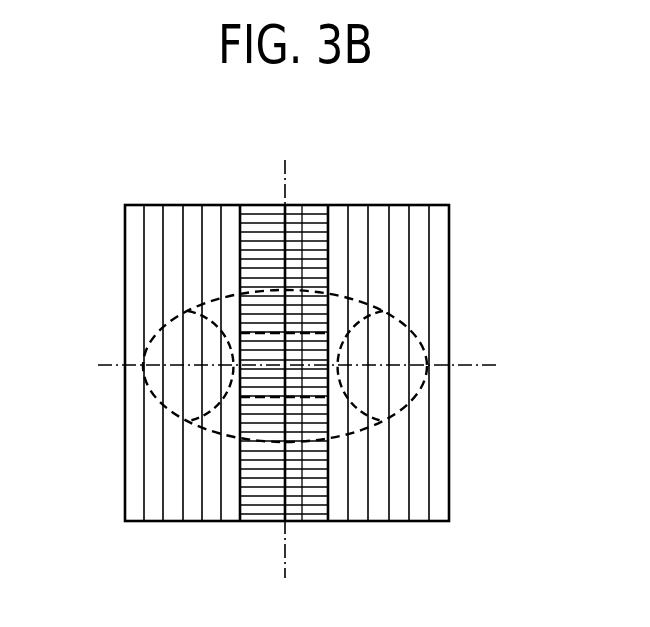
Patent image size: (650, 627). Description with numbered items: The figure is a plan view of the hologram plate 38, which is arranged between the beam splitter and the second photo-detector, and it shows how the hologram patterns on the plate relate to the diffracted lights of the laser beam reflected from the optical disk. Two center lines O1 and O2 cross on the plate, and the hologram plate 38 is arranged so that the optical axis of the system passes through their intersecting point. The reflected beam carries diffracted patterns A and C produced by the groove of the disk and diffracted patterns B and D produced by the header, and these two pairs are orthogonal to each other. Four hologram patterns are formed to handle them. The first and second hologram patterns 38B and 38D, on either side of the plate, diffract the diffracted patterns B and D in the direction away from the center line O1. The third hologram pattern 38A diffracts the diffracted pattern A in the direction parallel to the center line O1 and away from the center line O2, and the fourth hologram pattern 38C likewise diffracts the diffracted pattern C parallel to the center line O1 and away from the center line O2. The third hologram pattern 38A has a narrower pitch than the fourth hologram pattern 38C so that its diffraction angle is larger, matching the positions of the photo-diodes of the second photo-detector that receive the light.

The hologram plate 38 is at (426, 199).
The third hologram pattern 38A is at (257, 223).
The first hologram pattern 38B is at (441, 437).
The fourth hologram pattern 38C is at (325, 500).
The second hologram pattern 38D is at (126, 312).
The diffracted pattern A is at (298, 288).
The diffracted pattern B is at (418, 333).
The diffracted pattern C is at (302, 432).
The diffracted pattern D is at (146, 388).
The center line O1 is at (287, 560).
The center line O2 is at (479, 363).